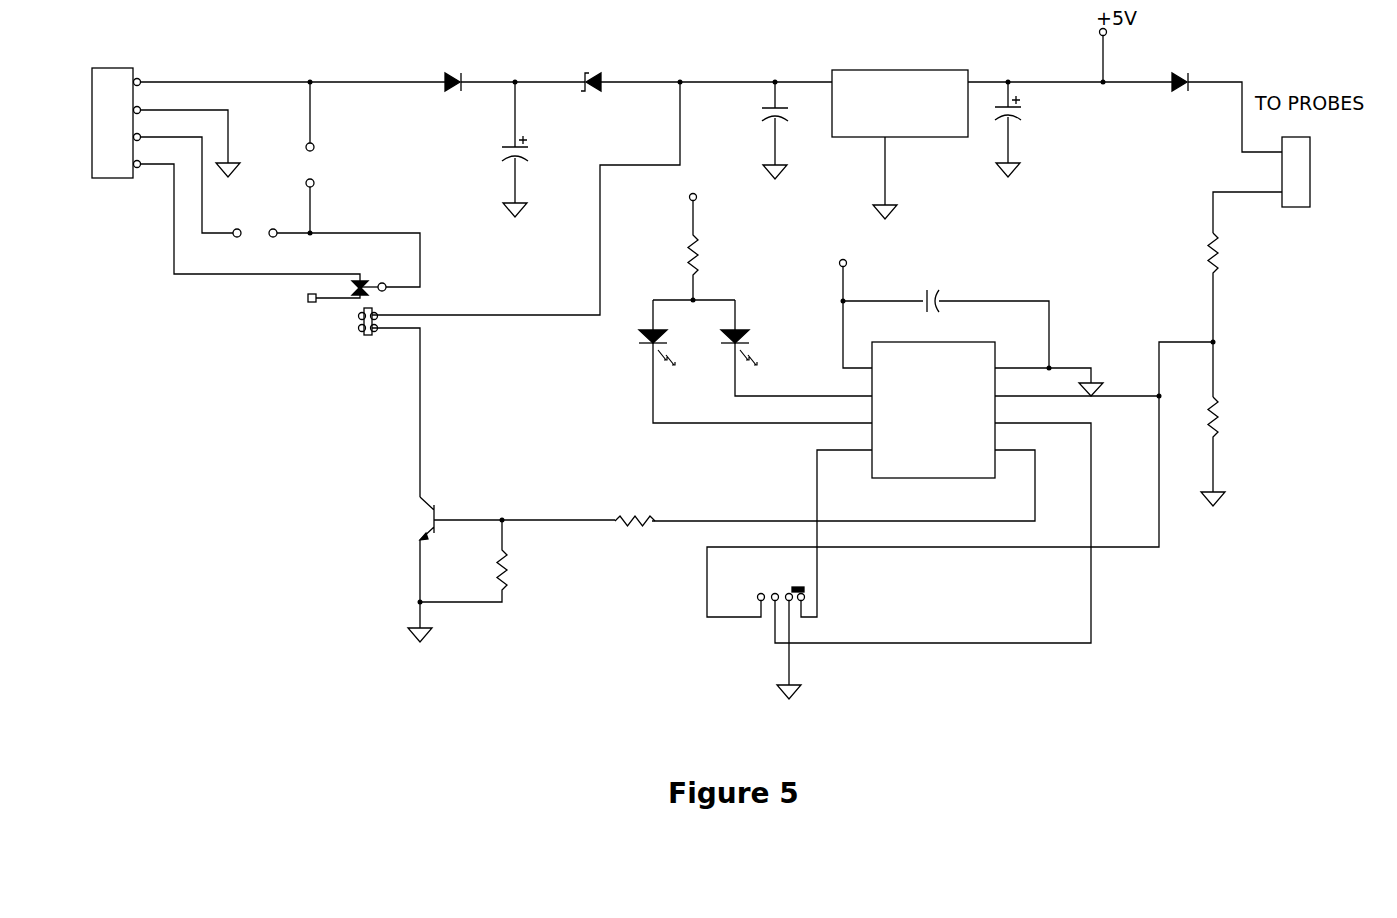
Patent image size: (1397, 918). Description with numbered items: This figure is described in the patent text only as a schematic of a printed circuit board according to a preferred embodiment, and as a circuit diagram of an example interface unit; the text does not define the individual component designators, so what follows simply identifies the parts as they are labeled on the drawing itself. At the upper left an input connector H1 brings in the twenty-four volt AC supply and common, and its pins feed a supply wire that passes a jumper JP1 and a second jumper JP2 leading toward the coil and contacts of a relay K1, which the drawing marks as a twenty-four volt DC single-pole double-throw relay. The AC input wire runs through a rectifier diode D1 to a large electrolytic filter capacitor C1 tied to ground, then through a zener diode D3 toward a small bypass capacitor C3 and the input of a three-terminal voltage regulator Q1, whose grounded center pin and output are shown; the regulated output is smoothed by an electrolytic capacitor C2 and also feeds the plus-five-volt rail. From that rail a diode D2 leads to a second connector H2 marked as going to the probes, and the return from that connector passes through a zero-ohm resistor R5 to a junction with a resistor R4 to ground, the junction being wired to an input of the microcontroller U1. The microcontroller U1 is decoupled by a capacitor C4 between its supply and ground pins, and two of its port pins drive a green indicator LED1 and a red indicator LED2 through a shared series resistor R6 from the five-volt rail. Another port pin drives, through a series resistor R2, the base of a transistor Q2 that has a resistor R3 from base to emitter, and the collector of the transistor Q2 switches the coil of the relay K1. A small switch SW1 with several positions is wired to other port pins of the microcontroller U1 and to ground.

The 24VAC input connector H1 is at (149, 111).
The jumper 1 JP1 is at (330, 157).
The jumper 2 JP2 is at (326, 245).
The 24VDC SPDT relay K1 is at (435, 289).
The rectifier diode 1N4002 D1 is at (452, 81).
The filter capacitor 220uF 50V C1 is at (472, 149).
The zener diode 1N4740 D3 is at (585, 81).
The capacitor .1uF C3 is at (792, 130).
The LM78L05 voltage regulator Q1 is at (898, 131).
The capacitor 100uF 10V C2 is at (1064, 129).
The diode 1N4148 D2 is at (1187, 82).
The probe connector H2 is at (1274, 185).
The resistor 0 ohm R5 is at (1254, 311).
The resistor 15K R4 is at (1235, 447).
The 12C671 microcontroller U1 is at (905, 440).
The capacitor .1uF C4 is at (946, 315).
The resistor 180 R6 is at (689, 236).
The green LED LED1 is at (683, 346).
The red LED LED2 is at (763, 346).
The PN2222A transistor Q2 is at (459, 565).
The resistor 27K R3 is at (491, 561).
The resistor 27K R2 is at (635, 524).
The switch SW1 is at (772, 633).